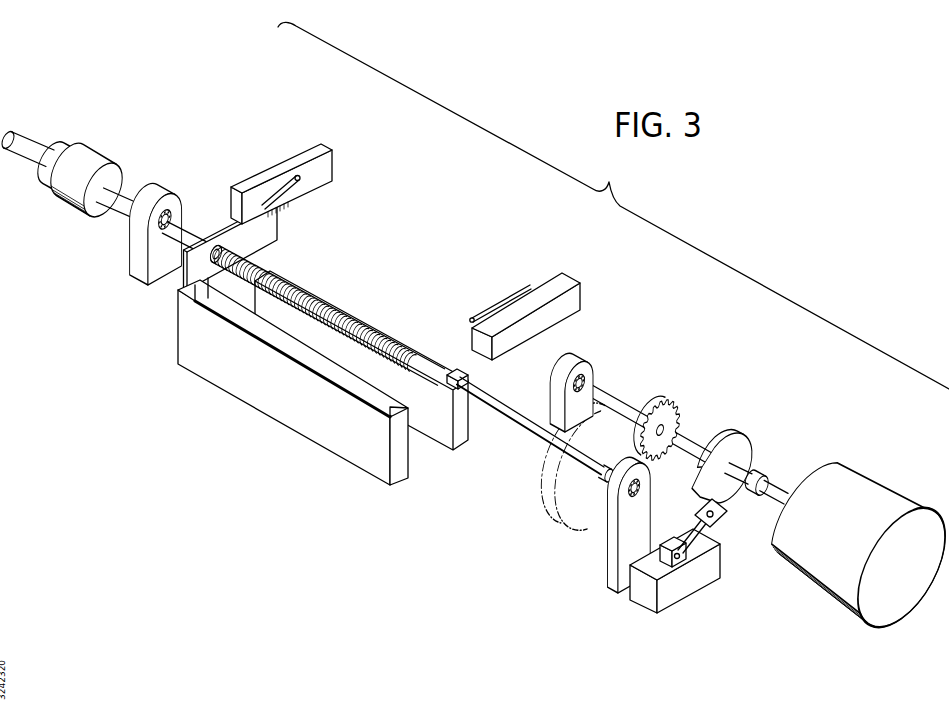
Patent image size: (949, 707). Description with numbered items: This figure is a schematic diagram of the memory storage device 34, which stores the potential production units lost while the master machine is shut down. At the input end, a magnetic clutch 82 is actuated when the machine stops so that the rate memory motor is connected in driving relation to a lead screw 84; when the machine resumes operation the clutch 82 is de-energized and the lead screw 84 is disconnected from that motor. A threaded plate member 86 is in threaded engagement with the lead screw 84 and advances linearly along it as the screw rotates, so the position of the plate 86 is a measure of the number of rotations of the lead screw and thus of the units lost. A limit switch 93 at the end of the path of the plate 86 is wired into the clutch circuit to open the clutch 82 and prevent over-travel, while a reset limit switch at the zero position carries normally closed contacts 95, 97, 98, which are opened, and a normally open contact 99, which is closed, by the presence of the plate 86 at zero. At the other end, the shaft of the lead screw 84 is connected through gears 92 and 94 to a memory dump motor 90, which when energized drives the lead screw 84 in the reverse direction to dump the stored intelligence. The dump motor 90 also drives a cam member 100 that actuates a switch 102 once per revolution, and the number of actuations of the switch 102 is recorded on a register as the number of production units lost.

The magnetic clutch 82 is at (74, 211).
The threaded plate member 86 is at (272, 231).
The memory storage device 34 is at (377, 278).
The lead screw 84 is at (503, 413).
The gear 92 is at (560, 490).
The limit switch 93 is at (498, 300).
The gear 94 is at (676, 422).
The cam member 100 is at (740, 452).
The memory dump motor 90 is at (860, 492).
The switch 102 is at (722, 520).
The normally closed contact 95 is at (287, 164).
The normally closed contact 97 is at (281, 184).
The normally closed contact 98 is at (281, 184).
The normally open contact 99 is at (281, 162).